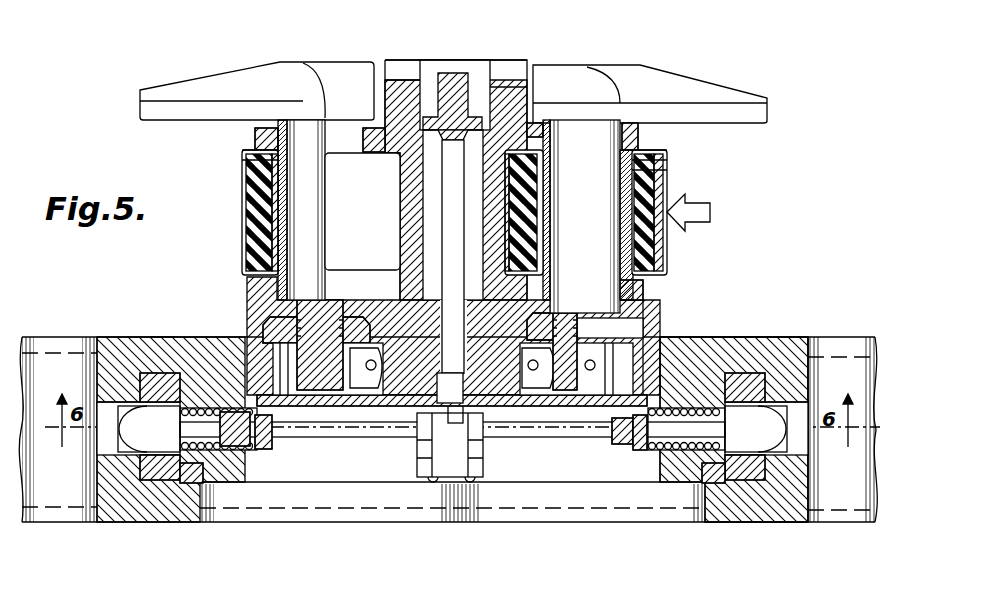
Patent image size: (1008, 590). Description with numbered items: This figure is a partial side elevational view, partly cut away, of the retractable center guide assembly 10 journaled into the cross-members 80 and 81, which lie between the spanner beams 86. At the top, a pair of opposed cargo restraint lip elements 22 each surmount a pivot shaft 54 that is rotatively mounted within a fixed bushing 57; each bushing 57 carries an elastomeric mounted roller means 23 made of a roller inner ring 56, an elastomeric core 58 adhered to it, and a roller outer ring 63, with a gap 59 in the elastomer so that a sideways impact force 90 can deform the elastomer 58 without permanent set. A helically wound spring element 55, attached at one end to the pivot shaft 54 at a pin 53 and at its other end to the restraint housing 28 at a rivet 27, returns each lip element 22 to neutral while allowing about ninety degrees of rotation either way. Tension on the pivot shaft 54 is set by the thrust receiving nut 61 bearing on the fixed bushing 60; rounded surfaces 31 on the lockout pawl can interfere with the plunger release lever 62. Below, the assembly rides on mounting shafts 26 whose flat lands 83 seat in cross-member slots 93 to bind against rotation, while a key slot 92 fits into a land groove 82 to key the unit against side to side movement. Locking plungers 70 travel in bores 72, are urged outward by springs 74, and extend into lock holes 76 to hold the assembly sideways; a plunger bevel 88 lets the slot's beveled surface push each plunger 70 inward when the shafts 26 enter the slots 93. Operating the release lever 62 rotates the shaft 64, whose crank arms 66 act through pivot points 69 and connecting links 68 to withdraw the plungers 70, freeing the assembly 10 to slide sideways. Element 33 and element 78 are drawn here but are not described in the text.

The retractable center guide assembly 10 is at (437, 49).
The cargo restraint lip element 22 is at (217, 78).
The roller means 23 is at (243, 251).
The pivot shaft 26 is at (150, 345).
The rivet 27 is at (372, 405).
The restraint housing 28 is at (503, 103).
The rounded surfaces 31 is at (375, 137).
The block 33 is at (640, 296).
The pin 53 is at (340, 370).
The pivot shaft 54 is at (303, 133).
The spring element 55 is at (265, 357).
The roller inner ring 56 is at (243, 184).
The fixed bushing 57 is at (283, 222).
The elastomeric core 58 is at (243, 202).
The gap 59 is at (243, 167).
The fixed bushing 60 is at (258, 303).
The thrust receiving nut 61 is at (397, 323).
The plunger release lever 62 is at (453, 80).
The roller outer ring 63 is at (667, 173).
The shaft 64 is at (455, 358).
The crank arm 66 is at (490, 460).
The connecting link 68 is at (367, 437).
The pivot point 69 is at (470, 480).
The locking plunger 70 is at (753, 353).
The bore 72 is at (172, 347).
The spring 74 is at (230, 450).
The lock hole 76 is at (107, 378).
The flange 78 is at (267, 447).
The cross-member 80 is at (783, 353).
The cross-member 81 is at (107, 347).
The land groove 82 is at (195, 347).
The flat land 83 is at (160, 350).
The spanner beam 86 is at (850, 343).
The plunger bevel 88 is at (130, 433).
The impact force 90 is at (711, 213).
The key slot 92 is at (190, 510).
The cross-member slot 93 is at (127, 347).